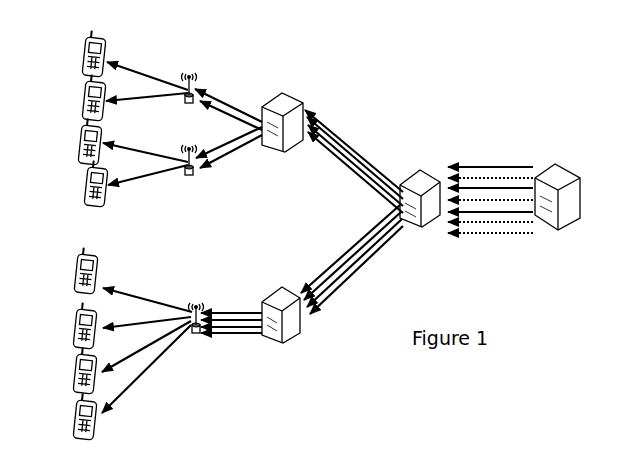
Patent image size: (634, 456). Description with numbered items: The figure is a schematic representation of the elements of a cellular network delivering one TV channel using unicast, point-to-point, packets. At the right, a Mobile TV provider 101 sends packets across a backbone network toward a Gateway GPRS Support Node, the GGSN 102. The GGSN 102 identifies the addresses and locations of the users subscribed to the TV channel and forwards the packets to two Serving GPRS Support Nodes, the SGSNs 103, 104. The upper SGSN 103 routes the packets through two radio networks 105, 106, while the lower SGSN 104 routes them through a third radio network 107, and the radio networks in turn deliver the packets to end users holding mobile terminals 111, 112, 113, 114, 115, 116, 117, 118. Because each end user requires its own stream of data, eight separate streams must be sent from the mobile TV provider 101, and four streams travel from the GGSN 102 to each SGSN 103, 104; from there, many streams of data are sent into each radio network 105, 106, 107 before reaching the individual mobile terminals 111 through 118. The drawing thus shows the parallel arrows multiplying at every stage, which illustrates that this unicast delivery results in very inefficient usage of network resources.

The Mobile TV provider 101 is at (581, 193).
The Gateway GPRS Support Node 102 is at (410, 223).
The Serving GPRS Support Node 103 is at (300, 106).
The Serving GPRS Support Node 104 is at (301, 331).
The radio network 105 is at (193, 90).
The radio network 106 is at (194, 172).
The radio network 107 is at (196, 308).
The mobile terminal 111 is at (85, 60).
The mobile terminal 112 is at (84, 110).
The mobile terminal 113 is at (80, 152).
The mobile terminal 114 is at (86, 195).
The mobile terminal 115 is at (76, 280).
The mobile terminal 116 is at (75, 333).
The mobile terminal 117 is at (75, 383).
The mobile terminal 118 is at (75, 425).